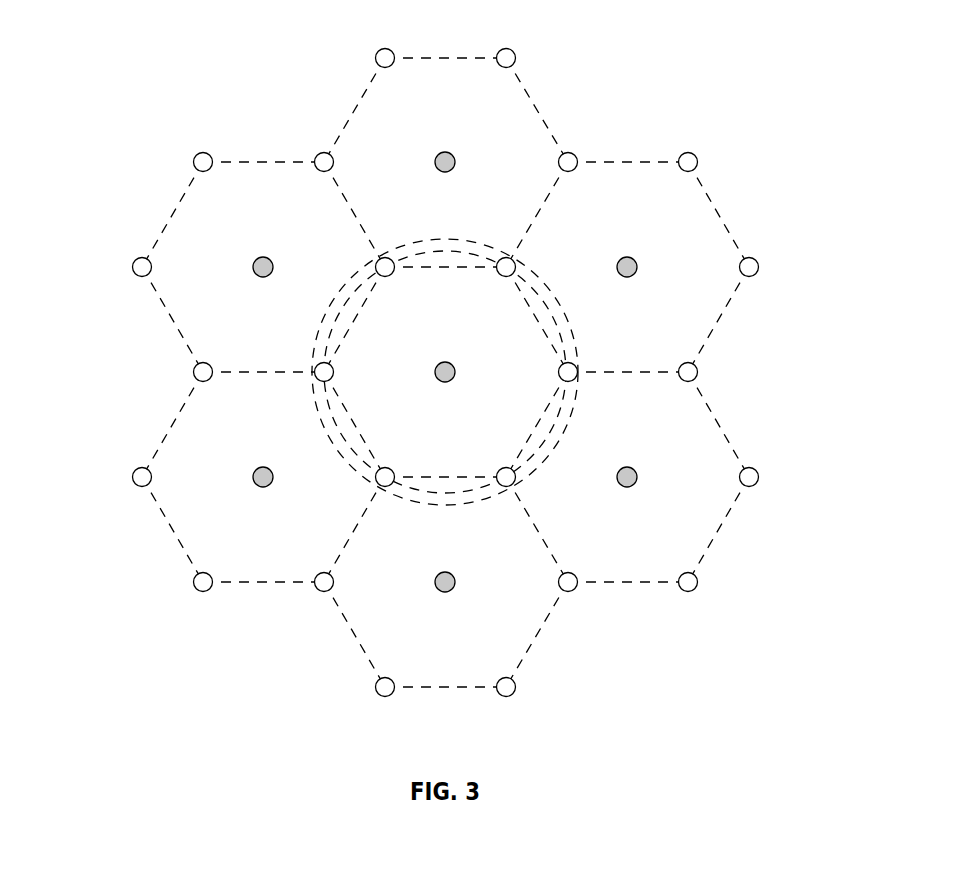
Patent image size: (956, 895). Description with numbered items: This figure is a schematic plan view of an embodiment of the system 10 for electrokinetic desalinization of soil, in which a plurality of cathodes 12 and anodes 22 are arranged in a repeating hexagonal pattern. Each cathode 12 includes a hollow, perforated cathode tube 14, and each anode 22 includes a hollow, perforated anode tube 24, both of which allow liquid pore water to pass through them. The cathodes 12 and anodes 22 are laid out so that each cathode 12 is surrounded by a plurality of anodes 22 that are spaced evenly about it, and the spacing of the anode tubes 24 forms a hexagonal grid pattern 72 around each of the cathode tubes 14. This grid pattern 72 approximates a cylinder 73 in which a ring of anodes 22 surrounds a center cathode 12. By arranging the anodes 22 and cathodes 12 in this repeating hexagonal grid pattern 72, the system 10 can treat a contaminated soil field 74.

The system for electrokinetic desalinization of soil 10 is at (445, 376).
The cathode 12 is at (446, 358).
The cathode tube 14 is at (438, 155).
The anode 22 is at (445, 376).
The anode tube 24 is at (378, 51).
The hexagonal grid pattern 72 is at (449, 253).
The cylinder 73 is at (556, 320).
The contaminated soil field 74 is at (802, 199).